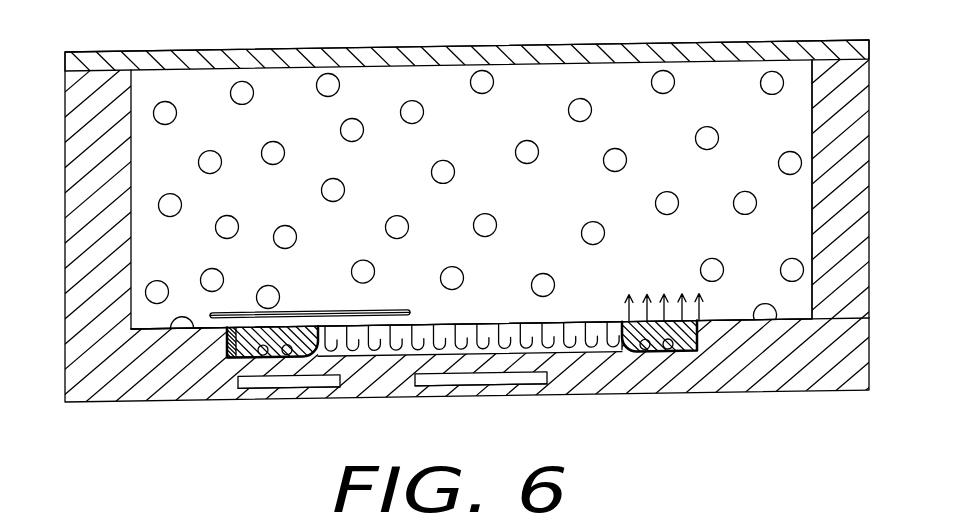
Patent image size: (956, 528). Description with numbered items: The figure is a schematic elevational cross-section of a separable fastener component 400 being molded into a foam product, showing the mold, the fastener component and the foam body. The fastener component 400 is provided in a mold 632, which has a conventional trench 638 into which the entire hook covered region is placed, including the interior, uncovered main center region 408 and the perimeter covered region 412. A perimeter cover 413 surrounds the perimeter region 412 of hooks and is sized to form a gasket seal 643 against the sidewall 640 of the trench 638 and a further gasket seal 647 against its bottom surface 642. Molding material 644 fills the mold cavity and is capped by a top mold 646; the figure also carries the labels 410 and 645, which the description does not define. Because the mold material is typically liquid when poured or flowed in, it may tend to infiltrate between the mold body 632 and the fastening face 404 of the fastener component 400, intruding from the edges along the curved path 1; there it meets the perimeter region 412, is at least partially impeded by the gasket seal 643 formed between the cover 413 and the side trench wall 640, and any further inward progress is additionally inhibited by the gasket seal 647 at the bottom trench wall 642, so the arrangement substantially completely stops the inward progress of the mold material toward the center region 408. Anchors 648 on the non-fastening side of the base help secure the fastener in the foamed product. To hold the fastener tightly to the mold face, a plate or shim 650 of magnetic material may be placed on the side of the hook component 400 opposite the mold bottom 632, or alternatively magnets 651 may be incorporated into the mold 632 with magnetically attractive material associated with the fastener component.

The curved path 1 is at (198, 329).
The fastener component 400 is at (415, 328).
The fastening face 404 is at (293, 353).
The interior uncovered region 408 is at (475, 330).
The heat spreader plate 410 is at (330, 316).
The perimeter covered region 412 is at (245, 333).
The perimeter cover 413 is at (228, 364).
The mold 632 is at (117, 386).
The trench 638 is at (478, 381).
The sidewall of the trench 640 is at (226, 340).
The bottom surface of the trench 642 is at (402, 362).
The gasket seal 643 is at (218, 329).
The molding material 644 is at (511, 206).
The housing side wall 645 is at (812, 244).
The top mold 646 is at (492, 52).
The gasket seal 647 is at (230, 347).
The anchors 648 is at (672, 319).
The plate or shim 650 is at (297, 316).
The magnets 651 is at (326, 392).